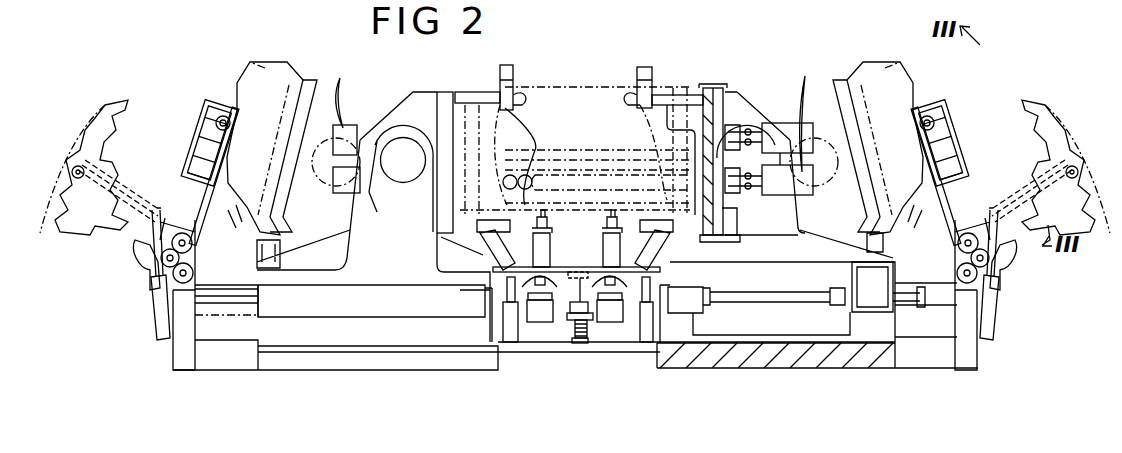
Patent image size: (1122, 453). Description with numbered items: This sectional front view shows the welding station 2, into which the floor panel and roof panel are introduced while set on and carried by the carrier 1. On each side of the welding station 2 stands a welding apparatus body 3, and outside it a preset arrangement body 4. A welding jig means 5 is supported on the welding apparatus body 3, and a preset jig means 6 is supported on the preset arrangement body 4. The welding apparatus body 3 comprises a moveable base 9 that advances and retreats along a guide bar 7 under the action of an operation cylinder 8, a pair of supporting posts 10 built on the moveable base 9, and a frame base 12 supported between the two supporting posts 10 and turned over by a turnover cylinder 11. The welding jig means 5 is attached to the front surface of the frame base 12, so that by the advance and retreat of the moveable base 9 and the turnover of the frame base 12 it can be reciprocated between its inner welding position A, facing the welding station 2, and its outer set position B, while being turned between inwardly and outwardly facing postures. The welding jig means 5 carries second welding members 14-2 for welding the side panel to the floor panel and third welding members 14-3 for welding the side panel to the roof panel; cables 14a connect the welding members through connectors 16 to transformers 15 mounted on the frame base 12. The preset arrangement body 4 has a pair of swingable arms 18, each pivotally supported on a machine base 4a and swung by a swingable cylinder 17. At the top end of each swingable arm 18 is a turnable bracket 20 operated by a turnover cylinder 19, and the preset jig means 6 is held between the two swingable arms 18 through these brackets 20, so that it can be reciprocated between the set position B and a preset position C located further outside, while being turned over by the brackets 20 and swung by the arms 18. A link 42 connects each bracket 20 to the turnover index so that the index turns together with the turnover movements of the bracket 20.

The carrier 1 is at (562, 270).
The welding station 2 is at (583, 137).
The welding apparatus body 3 is at (446, 324).
The preset arrangement body 4 is at (136, 270).
The machine base 4a is at (182, 322).
The welding jig means 5 is at (447, 96).
The preset jig means 6 is at (221, 116).
The guide bar 7 is at (228, 297).
The operation cylinder 8 is at (783, 303).
The moveable base 9 is at (375, 300).
The supporting post 10 is at (377, 212).
The turnover cylinder 11 is at (300, 243).
The frame base 12 is at (398, 118).
The second welding member 14-2 is at (650, 240).
The third welding member 14-3 is at (634, 96).
The cable 14a is at (677, 100).
The transformer 15 is at (579, 110).
The connector 16 is at (760, 124).
The swingable cylinder 17 is at (163, 300).
The swingable arm 18 is at (203, 140).
The turnover cylinder 19 is at (198, 158).
The turnable bracket 20 is at (218, 112).
The link 42 is at (238, 216).
The welding position A is at (582, 74).
The set position B is at (247, 52).
The preset position C is at (95, 97).